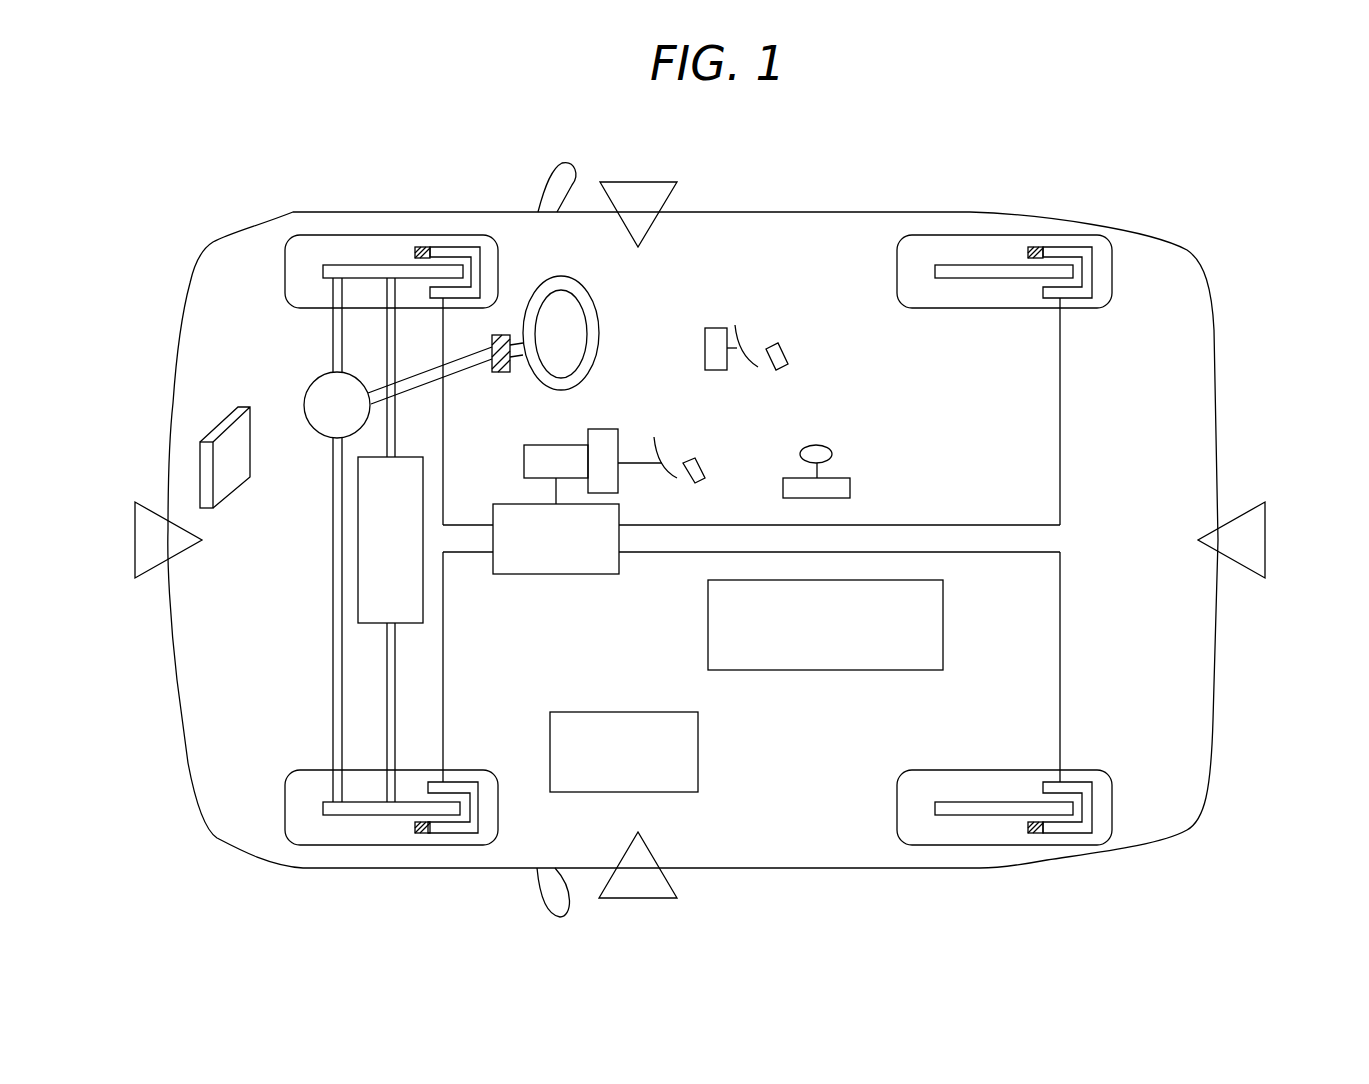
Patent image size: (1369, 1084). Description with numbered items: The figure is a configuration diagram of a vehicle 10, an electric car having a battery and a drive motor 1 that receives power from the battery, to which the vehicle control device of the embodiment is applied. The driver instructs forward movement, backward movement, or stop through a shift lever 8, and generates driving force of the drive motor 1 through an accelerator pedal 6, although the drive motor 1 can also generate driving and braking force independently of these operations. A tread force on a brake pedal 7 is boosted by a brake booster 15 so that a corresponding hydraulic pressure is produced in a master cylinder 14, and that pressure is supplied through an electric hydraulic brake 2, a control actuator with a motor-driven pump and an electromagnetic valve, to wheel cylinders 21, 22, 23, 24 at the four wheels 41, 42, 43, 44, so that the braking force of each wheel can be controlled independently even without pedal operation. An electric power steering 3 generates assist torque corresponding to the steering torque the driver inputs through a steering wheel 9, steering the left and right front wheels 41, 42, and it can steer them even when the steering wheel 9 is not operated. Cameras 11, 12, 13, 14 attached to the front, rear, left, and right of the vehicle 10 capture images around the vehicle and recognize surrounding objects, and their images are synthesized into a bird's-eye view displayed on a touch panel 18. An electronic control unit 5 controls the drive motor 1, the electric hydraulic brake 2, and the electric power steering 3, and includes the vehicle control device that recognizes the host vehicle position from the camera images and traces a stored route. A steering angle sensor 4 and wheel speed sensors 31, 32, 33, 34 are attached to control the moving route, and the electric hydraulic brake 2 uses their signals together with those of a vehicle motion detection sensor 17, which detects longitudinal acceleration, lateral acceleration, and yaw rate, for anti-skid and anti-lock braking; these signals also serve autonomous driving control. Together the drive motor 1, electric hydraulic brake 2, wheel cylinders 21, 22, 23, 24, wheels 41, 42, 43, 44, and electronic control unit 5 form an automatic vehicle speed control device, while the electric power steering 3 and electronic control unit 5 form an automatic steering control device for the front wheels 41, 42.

The drive motor 1 is at (358, 592).
The electric hydraulic brake 2 is at (533, 574).
The electric power steering 3 is at (312, 380).
The steering angle sensor 4 is at (500, 335).
The electronic control unit 5 is at (698, 751).
The accelerator pedal 6 is at (787, 348).
The brake pedal 7 is at (705, 462).
The shift lever 8 is at (833, 453).
The steering wheel 9 is at (598, 298).
The vehicle 10 is at (757, 212).
The camera 11 is at (135, 540).
The camera 12 is at (640, 902).
The camera 13 is at (640, 182).
The camera / master cylinder 14 is at (1265, 541).
The brake booster 15 is at (605, 429).
The vehicle motion detection sensor 17 is at (943, 633).
The touch panel 18 is at (200, 473).
The wheel cylinder 21 is at (455, 833).
The wheel cylinder 22 is at (455, 247).
The wheel cylinder 23 is at (1068, 833).
The wheel cylinder 24 is at (1067, 247).
The wheel speed sensor 31 is at (422, 833).
The wheel speed sensor 32 is at (423, 247).
The wheel speed sensor 33 is at (1033, 833).
The wheel speed sensor 34 is at (1035, 247).
The front wheel 41 is at (285, 808).
The front wheel 42 is at (285, 272).
The wheel 43 is at (897, 808).
The wheel 44 is at (897, 272).